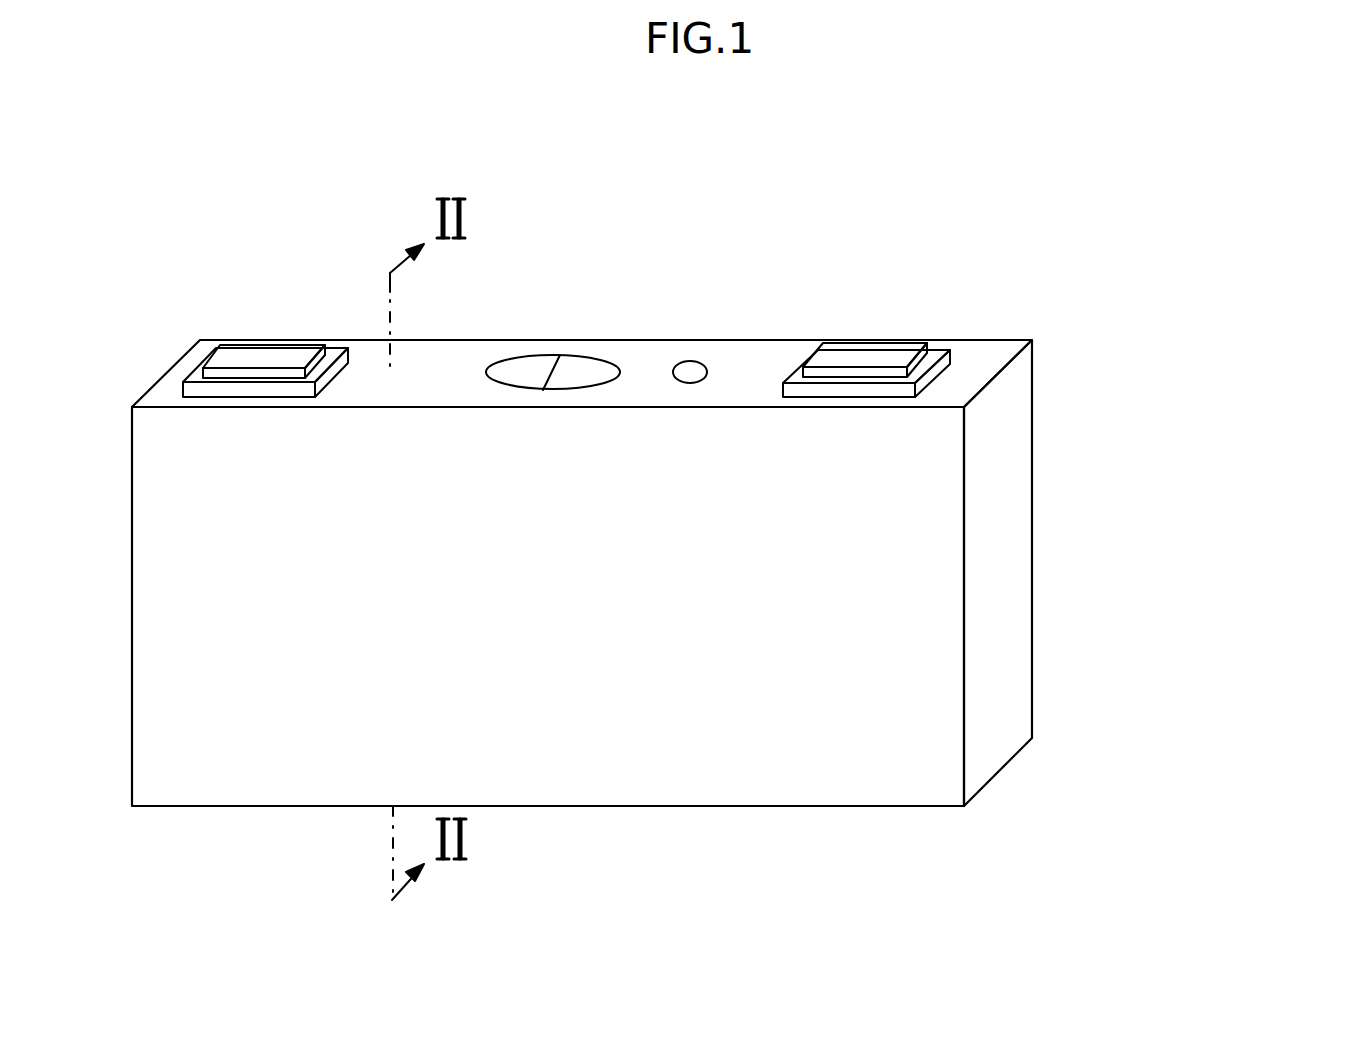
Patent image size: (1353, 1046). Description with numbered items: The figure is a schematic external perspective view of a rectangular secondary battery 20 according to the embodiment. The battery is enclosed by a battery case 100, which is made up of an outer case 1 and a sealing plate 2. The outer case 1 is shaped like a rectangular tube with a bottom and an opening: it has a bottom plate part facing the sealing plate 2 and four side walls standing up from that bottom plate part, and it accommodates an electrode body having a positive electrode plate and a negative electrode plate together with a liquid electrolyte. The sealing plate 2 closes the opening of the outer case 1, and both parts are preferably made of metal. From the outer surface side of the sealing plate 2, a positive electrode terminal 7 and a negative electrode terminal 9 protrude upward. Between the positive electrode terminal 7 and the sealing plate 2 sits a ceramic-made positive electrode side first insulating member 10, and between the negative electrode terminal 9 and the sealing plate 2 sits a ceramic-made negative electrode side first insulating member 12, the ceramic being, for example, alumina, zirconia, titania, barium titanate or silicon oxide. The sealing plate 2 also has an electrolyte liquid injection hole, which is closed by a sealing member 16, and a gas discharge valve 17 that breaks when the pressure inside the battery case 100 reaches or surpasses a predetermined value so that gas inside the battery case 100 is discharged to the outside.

The rectangular secondary battery 20 is at (178, 132).
The battery case 100 is at (1205, 238).
The outer case 1 is at (1013, 463).
The sealing plate 2 is at (973, 355).
The positive electrode terminal 7 is at (888, 357).
The positive electrode side first insulating member 10 is at (932, 347).
The negative electrode terminal 9 is at (280, 360).
The negative electrode side first insulating member 12 is at (333, 352).
The sealing member 16 is at (690, 370).
The gas discharge valve 17 is at (573, 363).